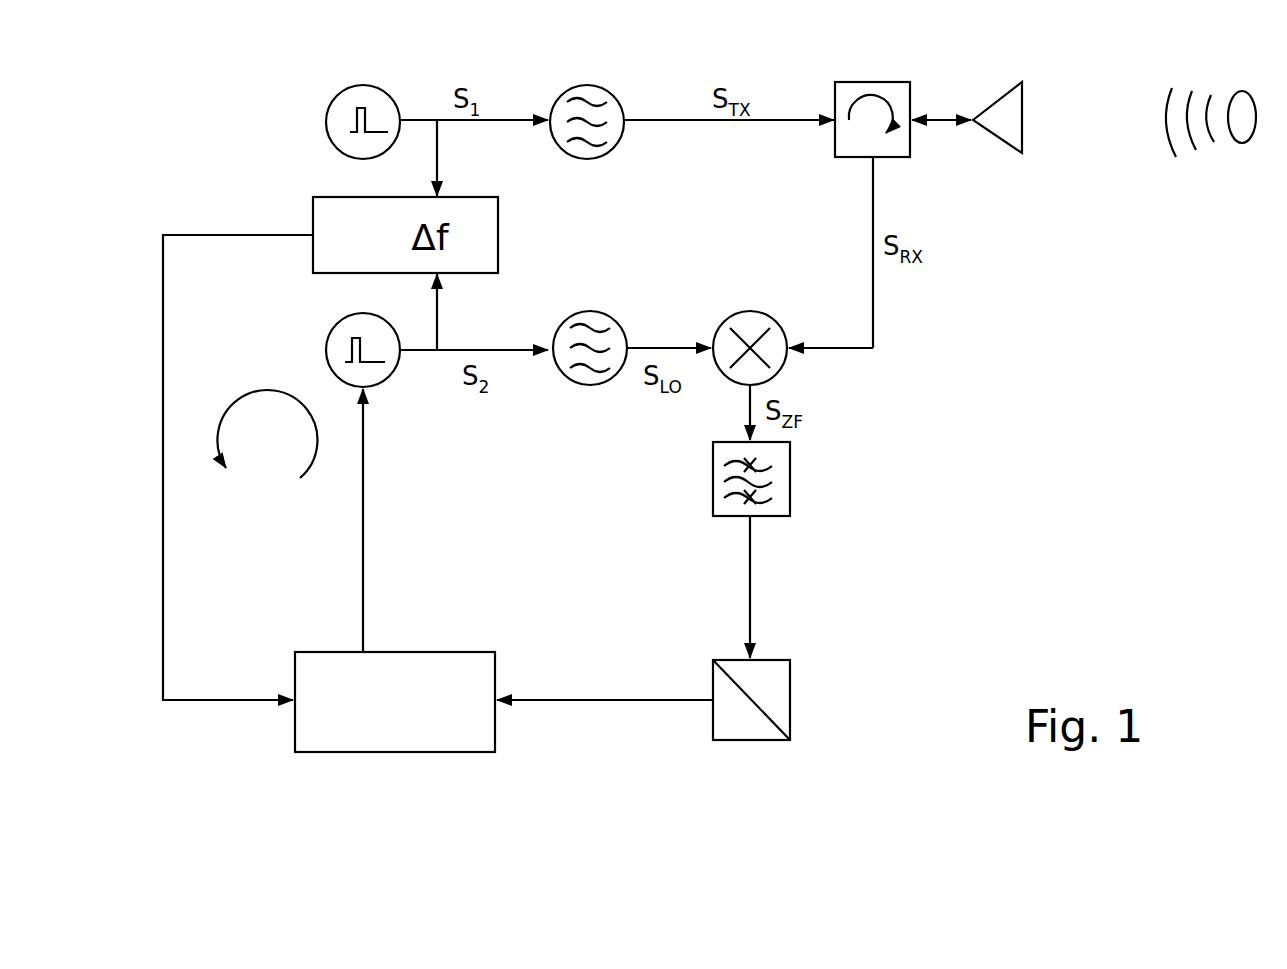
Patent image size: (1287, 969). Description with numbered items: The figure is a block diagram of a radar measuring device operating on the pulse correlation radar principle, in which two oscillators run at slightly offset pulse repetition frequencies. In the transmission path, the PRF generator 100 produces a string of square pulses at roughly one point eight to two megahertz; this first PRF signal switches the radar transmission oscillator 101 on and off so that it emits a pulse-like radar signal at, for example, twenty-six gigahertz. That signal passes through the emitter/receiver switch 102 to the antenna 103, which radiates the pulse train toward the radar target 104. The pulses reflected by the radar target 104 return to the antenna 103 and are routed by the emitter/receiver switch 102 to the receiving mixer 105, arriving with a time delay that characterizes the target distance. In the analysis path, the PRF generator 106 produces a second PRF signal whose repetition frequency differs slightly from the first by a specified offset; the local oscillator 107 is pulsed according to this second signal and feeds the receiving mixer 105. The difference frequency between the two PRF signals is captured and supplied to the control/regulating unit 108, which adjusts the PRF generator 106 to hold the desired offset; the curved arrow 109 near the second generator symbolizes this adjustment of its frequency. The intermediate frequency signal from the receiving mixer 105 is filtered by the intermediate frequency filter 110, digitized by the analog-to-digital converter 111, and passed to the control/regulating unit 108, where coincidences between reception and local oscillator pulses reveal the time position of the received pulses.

The PRF generator 100 is at (373, 86).
The radar transmission oscillator 101 is at (596, 86).
The emitter/receiver switch 102 is at (884, 82).
The antenna 103 is at (1013, 92).
The radar target 104 is at (1242, 92).
The receiving mixer 105 is at (768, 322).
The PRF generator 106 is at (336, 336).
The local oscillator 107 is at (613, 322).
The control/regulating unit 108 is at (430, 722).
The rotation / frequency shift indication 109 is at (262, 393).
The intermediate frequency filter 110 is at (792, 496).
The analog-to-digital converter 111 is at (792, 682).